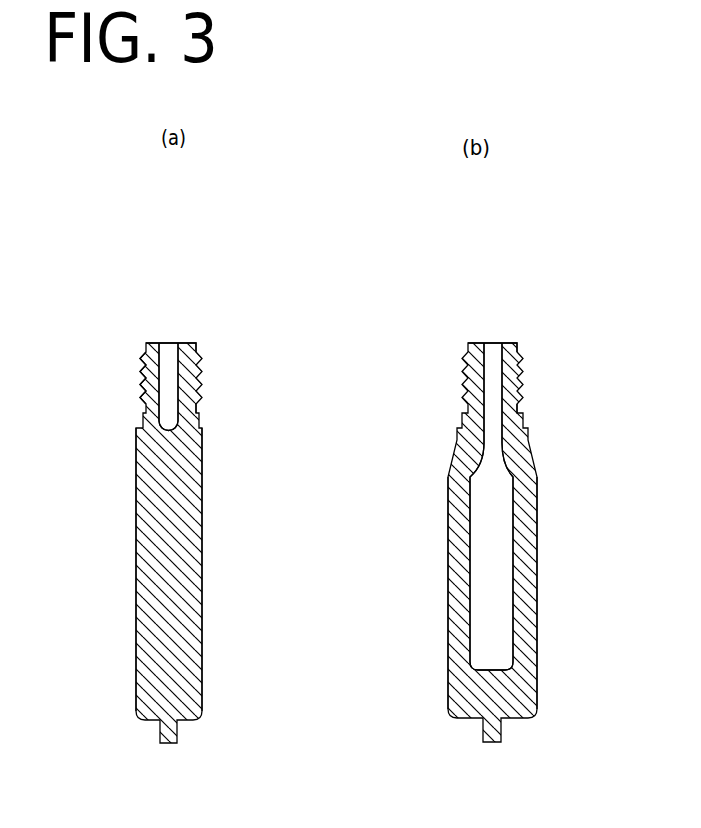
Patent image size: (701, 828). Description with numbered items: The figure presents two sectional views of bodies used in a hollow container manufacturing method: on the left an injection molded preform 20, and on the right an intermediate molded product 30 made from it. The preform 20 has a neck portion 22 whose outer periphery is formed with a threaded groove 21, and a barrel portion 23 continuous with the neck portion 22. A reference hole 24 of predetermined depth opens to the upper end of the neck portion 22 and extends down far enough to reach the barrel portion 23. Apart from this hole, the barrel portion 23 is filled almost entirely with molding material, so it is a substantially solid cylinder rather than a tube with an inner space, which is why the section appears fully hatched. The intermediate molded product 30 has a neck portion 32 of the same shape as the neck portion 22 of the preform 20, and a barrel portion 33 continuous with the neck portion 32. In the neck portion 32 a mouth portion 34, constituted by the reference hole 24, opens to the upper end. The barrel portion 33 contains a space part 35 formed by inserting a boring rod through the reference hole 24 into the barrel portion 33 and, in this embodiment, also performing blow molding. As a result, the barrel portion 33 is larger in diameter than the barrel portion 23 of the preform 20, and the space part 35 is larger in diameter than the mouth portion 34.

The preform 20 is at (183, 478).
The threaded groove 21 is at (138, 373).
The neck portion 22 is at (197, 352).
The barrel portion 23 is at (190, 543).
The reference hole 24 is at (168, 345).
The intermediate molded product 30 is at (517, 473).
The neck portion 32 is at (518, 350).
The barrel portion 33 is at (523, 531).
The mouth portion 34 is at (493, 343).
The space part 35 is at (487, 581).